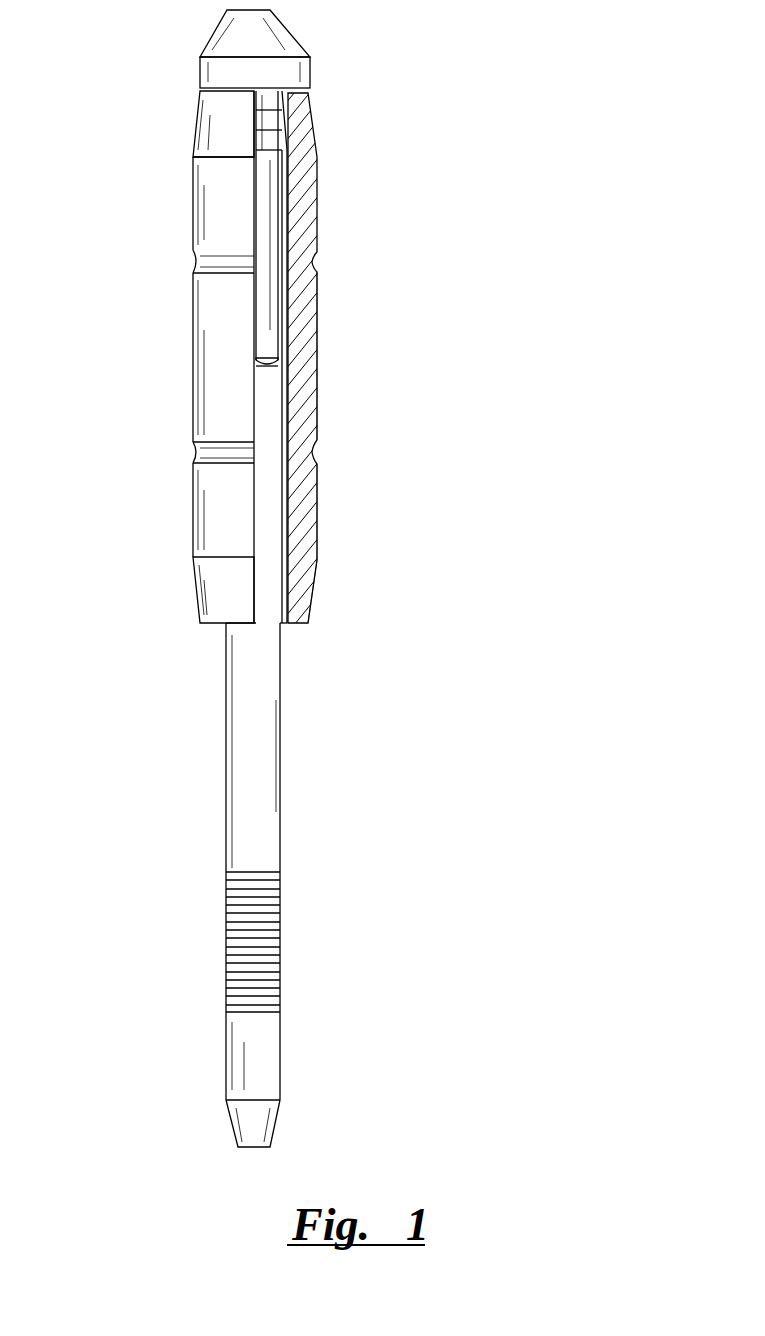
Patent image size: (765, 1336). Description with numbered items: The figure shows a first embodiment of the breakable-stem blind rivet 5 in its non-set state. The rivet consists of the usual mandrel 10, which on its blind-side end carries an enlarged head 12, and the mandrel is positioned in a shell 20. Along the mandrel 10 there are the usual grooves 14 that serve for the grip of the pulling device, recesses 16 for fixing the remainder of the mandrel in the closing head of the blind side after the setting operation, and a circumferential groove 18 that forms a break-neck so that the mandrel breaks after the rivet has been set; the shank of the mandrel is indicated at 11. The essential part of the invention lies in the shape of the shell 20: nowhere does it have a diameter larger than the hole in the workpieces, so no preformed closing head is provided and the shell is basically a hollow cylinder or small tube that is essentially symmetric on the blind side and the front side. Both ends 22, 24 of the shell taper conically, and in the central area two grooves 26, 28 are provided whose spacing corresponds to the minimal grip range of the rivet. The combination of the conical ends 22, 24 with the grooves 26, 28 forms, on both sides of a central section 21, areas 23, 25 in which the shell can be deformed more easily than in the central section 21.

The breakable-stem blind rivet 5 is at (148, 350).
The mandrel 10 is at (264, 695).
The stem shaft 11 is at (257, 764).
The head 12 is at (285, 62).
The grooves 14 is at (265, 955).
The recesses 16 is at (270, 123).
The circumferential groove 18 is at (258, 372).
The shell 20 is at (237, 329).
The central section 21 is at (320, 420).
The conically tapering end 22 is at (208, 104).
The more easily deformable area 23 is at (320, 115).
The conically tapering end 24 is at (208, 613).
The more easily deformable area 25 is at (320, 595).
The groove 26 is at (212, 262).
The groove 28 is at (205, 453).